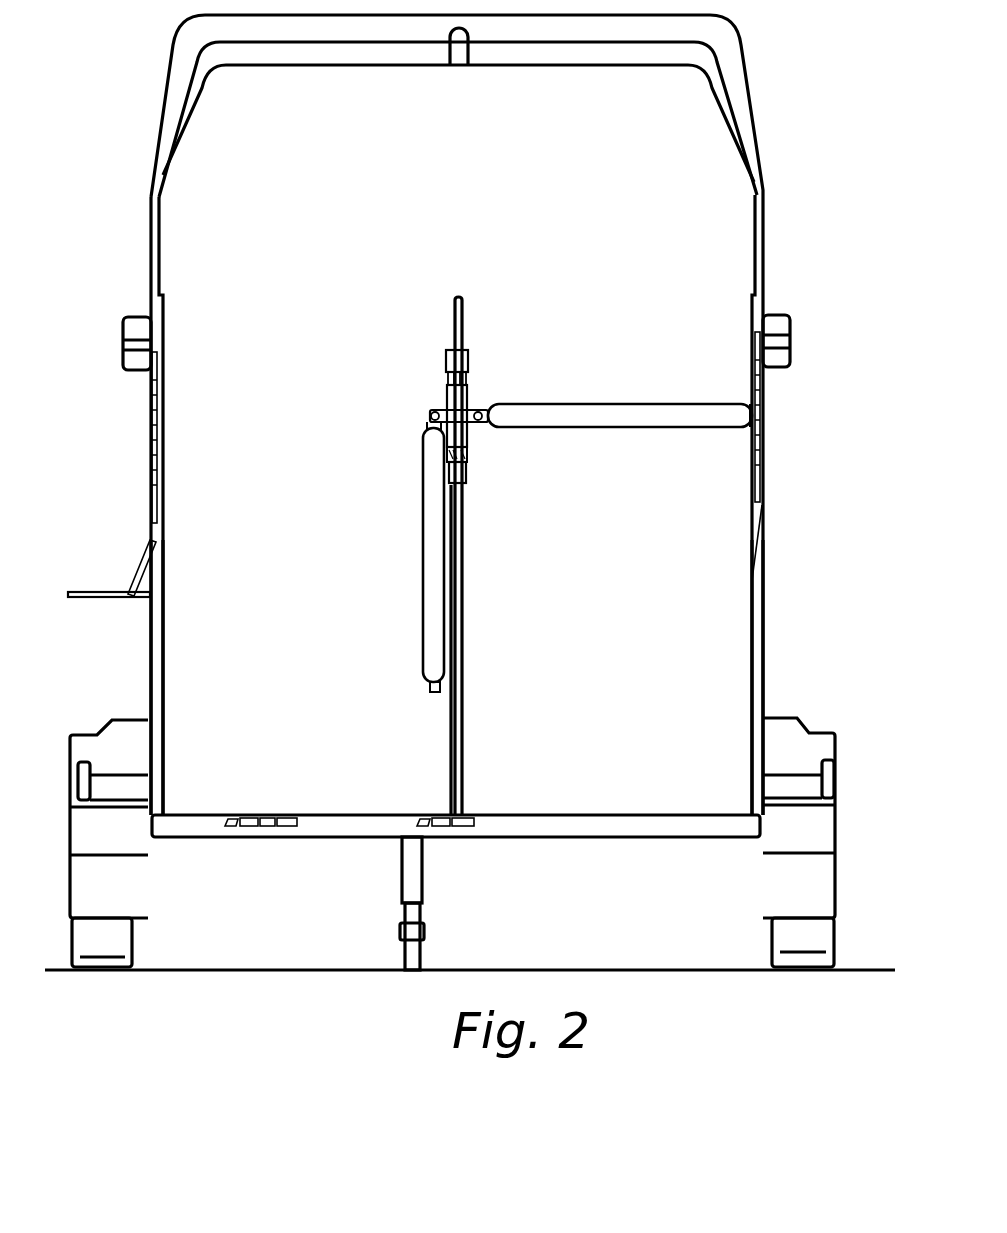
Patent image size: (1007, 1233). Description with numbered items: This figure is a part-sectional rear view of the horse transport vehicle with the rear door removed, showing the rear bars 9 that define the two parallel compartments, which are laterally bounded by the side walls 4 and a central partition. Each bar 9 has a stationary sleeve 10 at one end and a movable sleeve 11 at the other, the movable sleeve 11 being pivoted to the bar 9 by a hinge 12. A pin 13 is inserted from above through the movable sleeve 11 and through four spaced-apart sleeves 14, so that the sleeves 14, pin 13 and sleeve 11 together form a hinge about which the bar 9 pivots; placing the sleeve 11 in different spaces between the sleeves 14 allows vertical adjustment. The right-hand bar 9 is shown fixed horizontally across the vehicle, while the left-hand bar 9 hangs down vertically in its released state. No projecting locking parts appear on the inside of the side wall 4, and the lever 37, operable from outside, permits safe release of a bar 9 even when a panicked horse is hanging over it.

The side wall 4 is at (160, 630).
The bar 9 is at (428, 556).
The stationary sleeve 10 is at (433, 690).
The movable sleeve 11 is at (443, 409).
The hinge 12 is at (430, 416).
The pin 13 is at (468, 381).
The spaced-apart sleeves 14 is at (446, 362).
The lever 37 is at (105, 600).